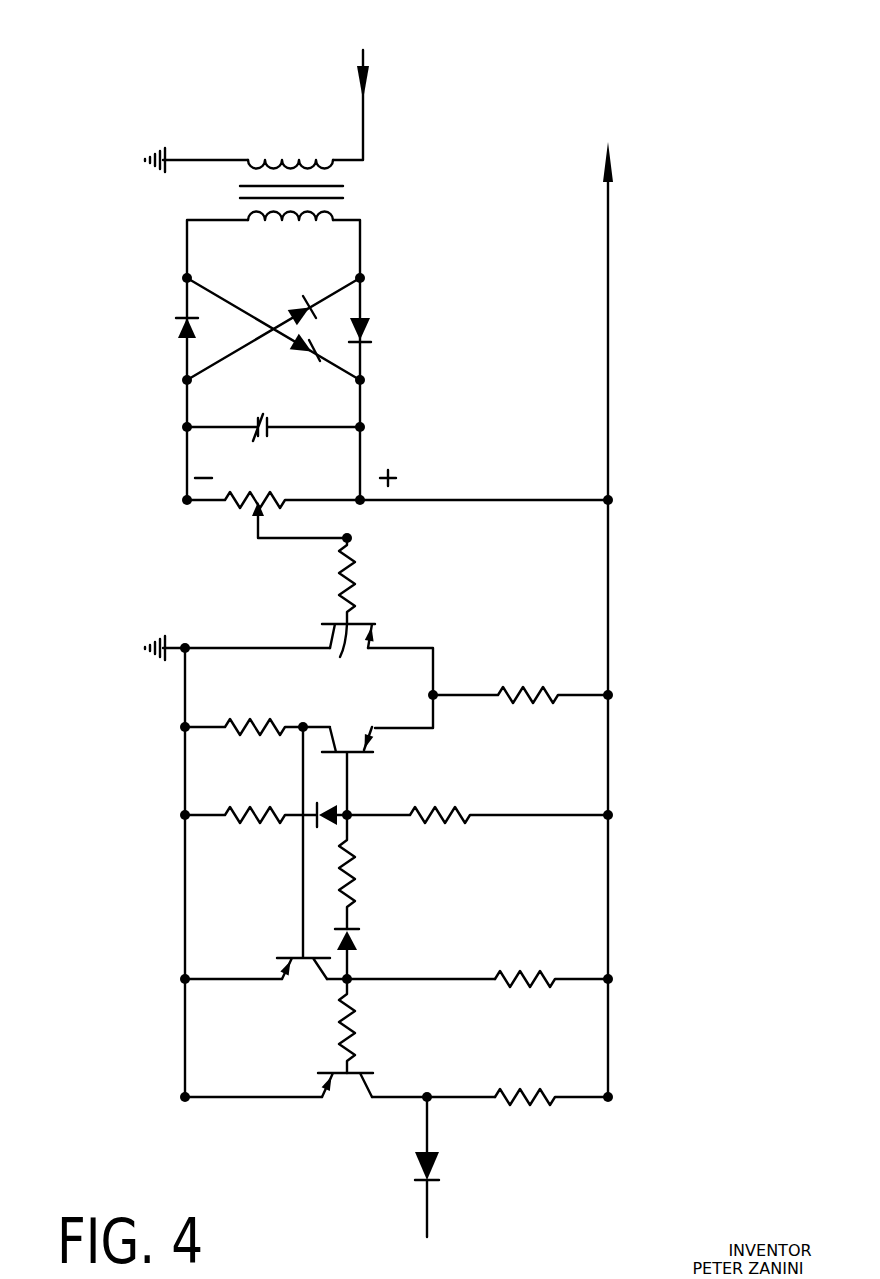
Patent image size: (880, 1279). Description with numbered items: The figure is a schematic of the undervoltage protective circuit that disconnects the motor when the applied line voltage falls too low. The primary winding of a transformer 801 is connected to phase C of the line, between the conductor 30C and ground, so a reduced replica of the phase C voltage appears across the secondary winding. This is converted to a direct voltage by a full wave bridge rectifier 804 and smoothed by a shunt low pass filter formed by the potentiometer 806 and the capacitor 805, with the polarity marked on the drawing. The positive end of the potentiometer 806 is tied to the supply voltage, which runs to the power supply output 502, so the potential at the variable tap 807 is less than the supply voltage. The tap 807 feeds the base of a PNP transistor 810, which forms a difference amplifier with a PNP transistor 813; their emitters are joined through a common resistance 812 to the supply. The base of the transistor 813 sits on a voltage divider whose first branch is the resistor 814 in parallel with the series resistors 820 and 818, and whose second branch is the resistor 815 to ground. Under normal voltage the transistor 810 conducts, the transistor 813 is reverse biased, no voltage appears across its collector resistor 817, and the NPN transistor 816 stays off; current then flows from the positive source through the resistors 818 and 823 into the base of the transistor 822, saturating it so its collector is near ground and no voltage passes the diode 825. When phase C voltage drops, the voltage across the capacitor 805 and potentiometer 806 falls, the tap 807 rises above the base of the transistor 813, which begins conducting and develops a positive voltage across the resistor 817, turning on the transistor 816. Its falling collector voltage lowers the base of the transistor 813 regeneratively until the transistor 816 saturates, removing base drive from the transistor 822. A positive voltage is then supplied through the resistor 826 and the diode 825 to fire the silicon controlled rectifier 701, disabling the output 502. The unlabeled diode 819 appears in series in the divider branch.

The conductor 30C is at (430, 80).
The transformer 801 is at (245, 186).
The full wave bridge rectifier 804 is at (372, 263).
The capacitor 805 is at (264, 413).
The potentiometer 806 is at (272, 495).
The variable tap 807 is at (263, 541).
The PNP transistor 810 is at (347, 654).
The common resistance 812 is at (536, 700).
The PNP transistor 813 is at (352, 757).
The resistor 814 is at (453, 822).
The resistor 815 is at (253, 828).
The NPN transistor 816 is at (291, 977).
The collector resistor 817 is at (255, 735).
The resistor 818 is at (527, 990).
The diode 819 is at (360, 937).
The resistor 820 is at (357, 860).
The transistor 822 is at (327, 1099).
The resistor 823 is at (356, 1026).
The diode 825 is at (442, 1167).
The resistor 826 is at (540, 1101).
The output 502 is at (702, 606).
The silicon controlled rectifier 701 is at (482, 1222).